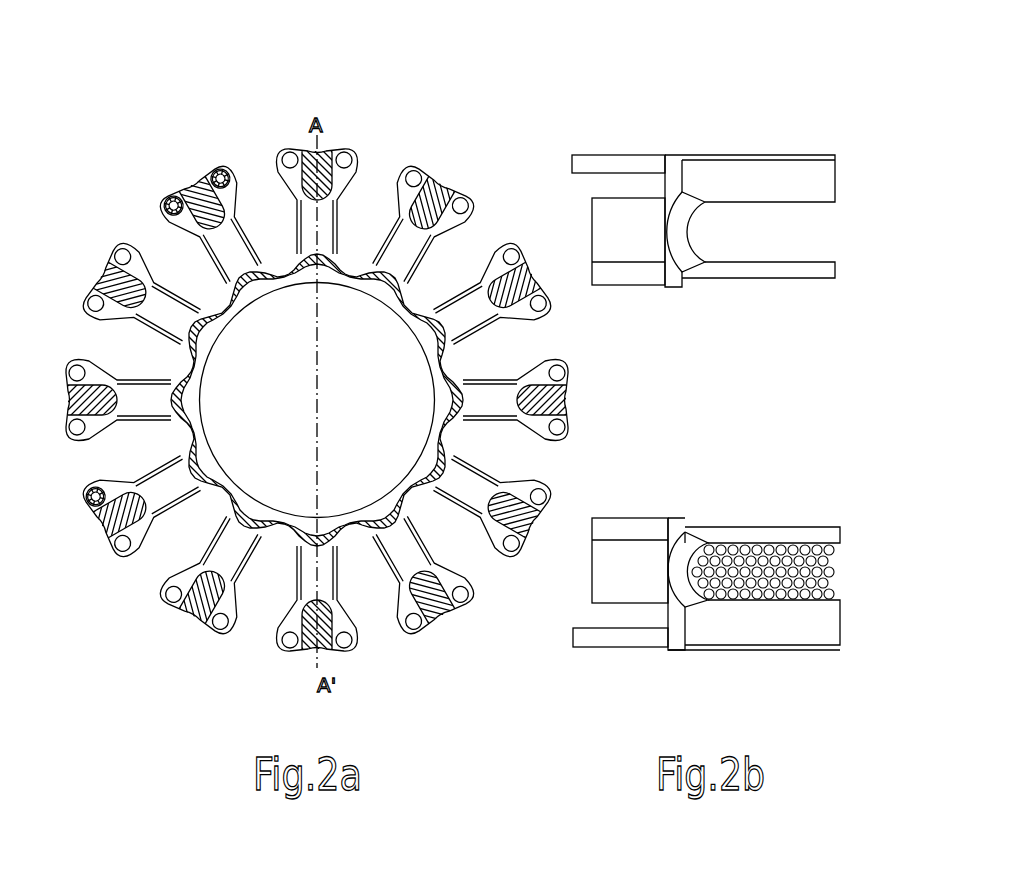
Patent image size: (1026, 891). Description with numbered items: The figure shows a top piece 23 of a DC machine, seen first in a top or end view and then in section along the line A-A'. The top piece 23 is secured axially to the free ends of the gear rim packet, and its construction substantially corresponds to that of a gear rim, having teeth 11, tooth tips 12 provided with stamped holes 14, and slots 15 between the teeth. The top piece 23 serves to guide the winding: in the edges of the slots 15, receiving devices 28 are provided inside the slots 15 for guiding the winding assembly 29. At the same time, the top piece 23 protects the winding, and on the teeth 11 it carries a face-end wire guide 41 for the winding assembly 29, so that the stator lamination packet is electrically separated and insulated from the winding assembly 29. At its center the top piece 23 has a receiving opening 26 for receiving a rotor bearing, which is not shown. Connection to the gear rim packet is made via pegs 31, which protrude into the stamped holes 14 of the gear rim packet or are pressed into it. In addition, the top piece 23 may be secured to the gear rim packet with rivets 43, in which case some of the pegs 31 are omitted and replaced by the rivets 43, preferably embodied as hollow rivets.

In FIG. 2a, the teeth 11 is at (147, 400).
In FIG. 2a, the tooth tips 12 is at (85, 483).
In FIG. 2a, the stamped holes 14 is at (191, 276).
In FIG. 2a, the slots 15 is at (188, 525).
In FIG. 2a, the top piece 23 is at (381, 351).
In FIG. 2a, the receiving opening 26 is at (268, 395).
In FIG. 2b, the receiving opening 26 is at (788, 527).
In FIG. 2b, the receiving devices 28 is at (640, 235).
In FIG. 2b, the winding assembly 29 is at (837, 570).
In FIG. 2a, the pegs 31 is at (465, 190).
In FIG. 2b, the pegs 31 is at (634, 165).
In FIG. 2a, the face-end wire guide 41 is at (547, 428).
In FIG. 2b, the face-end wire guide 41 is at (817, 230).
In FIG. 2a, the rivets 43 is at (216, 172).